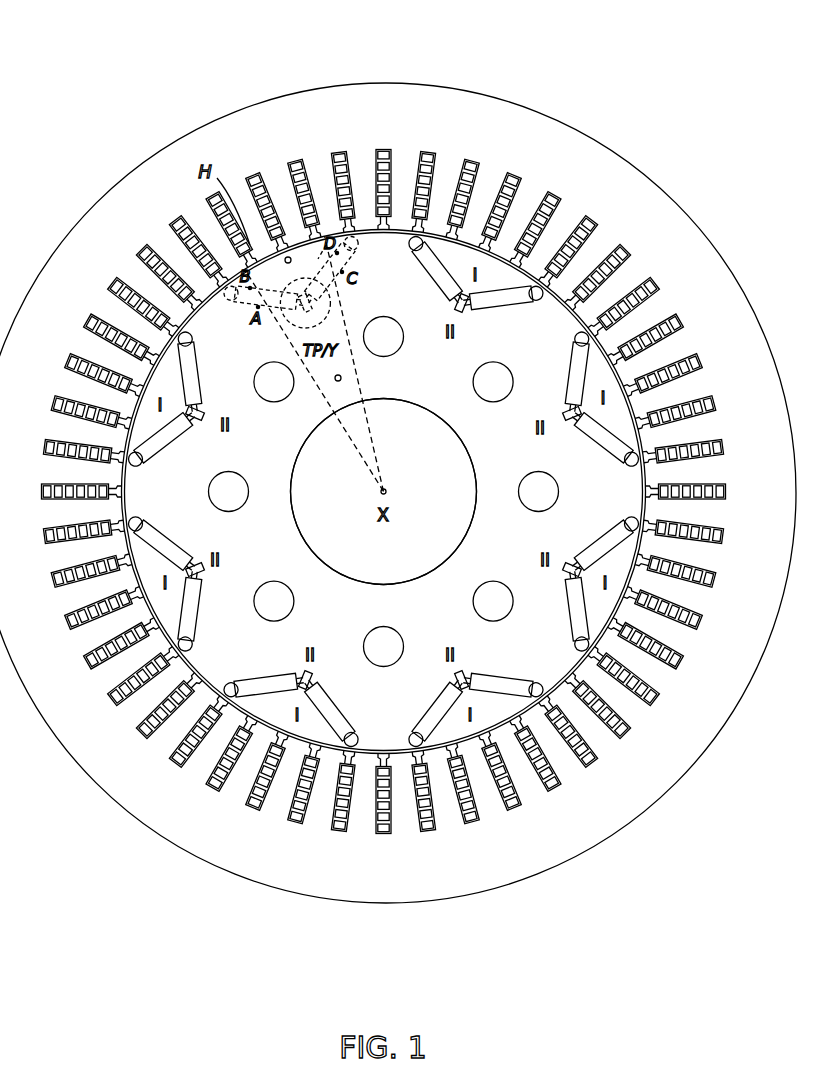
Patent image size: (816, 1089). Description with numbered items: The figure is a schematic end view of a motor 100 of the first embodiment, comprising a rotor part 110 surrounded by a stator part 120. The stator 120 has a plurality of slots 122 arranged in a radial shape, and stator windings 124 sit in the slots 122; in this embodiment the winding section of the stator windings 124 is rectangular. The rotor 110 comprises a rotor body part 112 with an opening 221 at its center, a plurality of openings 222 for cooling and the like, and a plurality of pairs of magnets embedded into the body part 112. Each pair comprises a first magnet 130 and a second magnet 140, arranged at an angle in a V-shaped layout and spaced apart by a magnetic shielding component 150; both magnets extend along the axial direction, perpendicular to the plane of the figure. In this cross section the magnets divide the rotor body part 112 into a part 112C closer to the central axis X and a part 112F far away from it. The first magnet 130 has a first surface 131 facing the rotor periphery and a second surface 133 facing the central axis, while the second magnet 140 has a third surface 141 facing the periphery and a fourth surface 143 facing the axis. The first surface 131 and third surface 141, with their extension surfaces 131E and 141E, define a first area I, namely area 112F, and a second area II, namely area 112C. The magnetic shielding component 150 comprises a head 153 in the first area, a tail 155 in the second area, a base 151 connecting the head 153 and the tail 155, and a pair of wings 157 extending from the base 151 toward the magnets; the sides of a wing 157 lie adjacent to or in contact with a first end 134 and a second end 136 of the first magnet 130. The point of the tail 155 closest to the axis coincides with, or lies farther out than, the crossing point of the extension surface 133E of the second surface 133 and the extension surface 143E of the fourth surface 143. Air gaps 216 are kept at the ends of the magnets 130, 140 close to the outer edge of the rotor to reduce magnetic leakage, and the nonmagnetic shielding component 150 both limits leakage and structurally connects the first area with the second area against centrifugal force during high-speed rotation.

The motor 100 is at (629, 43).
The rotor part 110 is at (473, 494).
The rotor body part 112 is at (507, 555).
The part closer to the central axis 112C is at (342, 379).
The part far away from the central axis 112F is at (286, 257).
The stator part 120 is at (694, 217).
The slots 122 is at (663, 283).
The stator windings 124 is at (683, 330).
The first magnet 130 is at (236, 305).
The first surface 131 is at (238, 283).
The extension surface of the first surface 131E is at (232, 290).
The second surface 133 is at (253, 307).
The extension surface of the second surface 133E is at (222, 294).
The first end of the first magnet 134 is at (443, 297).
The second end of the first magnet 136 is at (484, 306).
The second magnet 140 is at (354, 263).
The third surface 141 is at (333, 258).
The extension surface of the third surface 141E is at (360, 250).
The fourth surface 143 is at (362, 232).
The extension surface of the fourth surface 143E is at (368, 240).
The magnetic shielding component 150 is at (320, 313).
The base 151 is at (265, 268).
The head 153 is at (282, 280).
The tail 155 is at (296, 333).
The wings 157 is at (578, 432).
The air gaps 216 is at (551, 293).
The opening 221 is at (368, 560).
The openings 222 is at (370, 345).